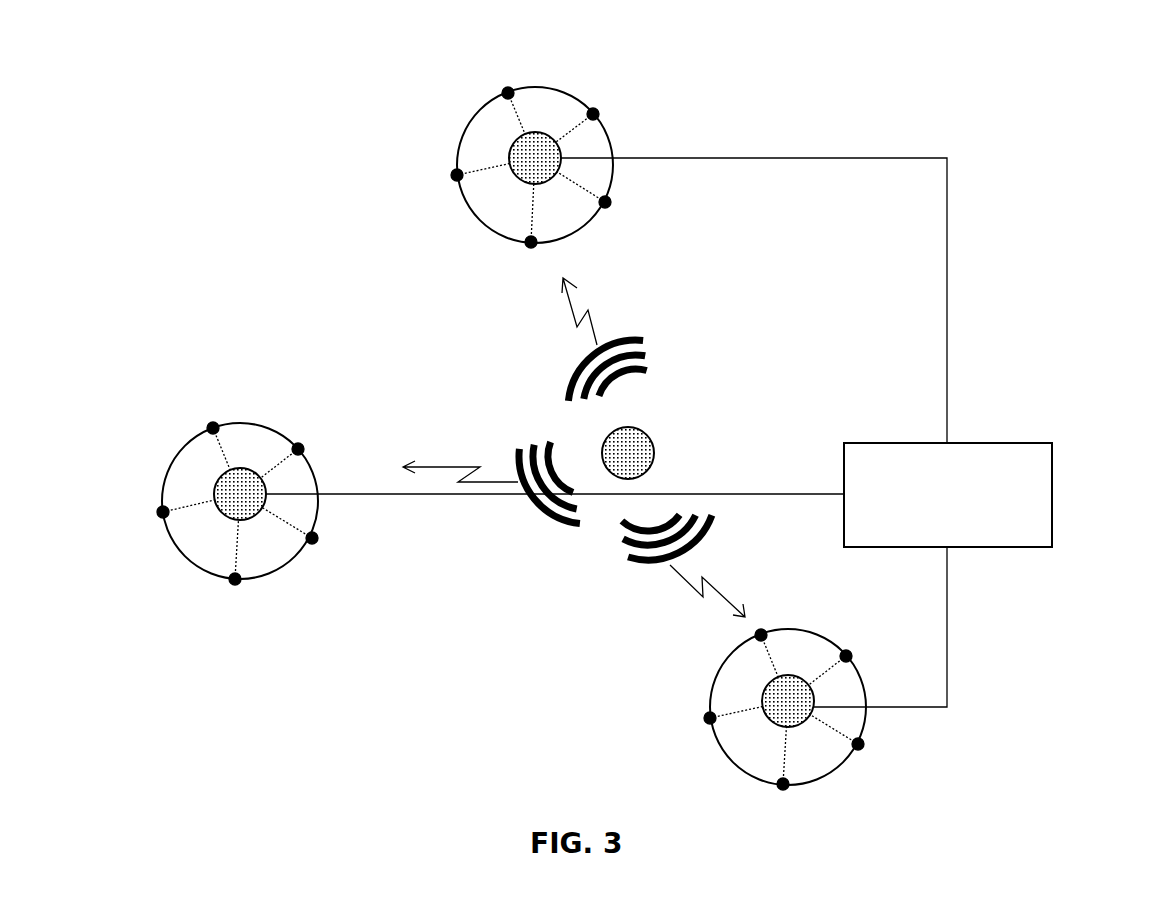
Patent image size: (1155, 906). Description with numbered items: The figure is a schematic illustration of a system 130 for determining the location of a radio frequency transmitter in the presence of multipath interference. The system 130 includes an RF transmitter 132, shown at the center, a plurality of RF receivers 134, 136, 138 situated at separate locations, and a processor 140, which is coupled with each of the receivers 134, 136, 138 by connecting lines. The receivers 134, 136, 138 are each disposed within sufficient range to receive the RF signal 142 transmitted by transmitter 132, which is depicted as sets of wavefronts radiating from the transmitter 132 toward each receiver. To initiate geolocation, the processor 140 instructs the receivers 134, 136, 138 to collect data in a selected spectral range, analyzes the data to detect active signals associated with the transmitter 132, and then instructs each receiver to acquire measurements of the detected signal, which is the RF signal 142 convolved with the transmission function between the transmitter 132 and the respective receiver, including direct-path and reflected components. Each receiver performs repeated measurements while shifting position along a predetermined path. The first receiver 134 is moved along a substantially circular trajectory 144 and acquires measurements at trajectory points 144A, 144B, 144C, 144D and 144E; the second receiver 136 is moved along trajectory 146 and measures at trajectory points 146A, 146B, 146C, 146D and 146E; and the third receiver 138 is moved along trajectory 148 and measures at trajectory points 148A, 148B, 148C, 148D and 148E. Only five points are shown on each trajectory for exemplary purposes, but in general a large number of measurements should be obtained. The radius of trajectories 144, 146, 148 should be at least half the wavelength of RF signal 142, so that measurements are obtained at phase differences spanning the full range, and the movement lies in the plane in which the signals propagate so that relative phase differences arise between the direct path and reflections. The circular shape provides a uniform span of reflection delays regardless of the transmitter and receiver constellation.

The system 130 is at (130, 66).
The radio frequency transmitter 132 is at (637, 427).
The RF receiver 134 is at (520, 182).
The RF receiver 136 is at (230, 520).
The RF receiver 138 is at (780, 727).
The processor 140 is at (1052, 465).
The RF signal 142 is at (637, 338).
The trajectory 144 is at (484, 100).
The trajectory point 144A is at (508, 93).
The trajectory point 144B is at (593, 114).
The trajectory point 144C is at (605, 202).
The trajectory point 144D is at (457, 175).
The trajectory point 144E is at (531, 242).
The trajectory 146 is at (186, 441).
The trajectory point 146A is at (213, 428).
The trajectory point 146B is at (298, 449).
The trajectory point 146C is at (312, 538).
The trajectory point 146D is at (163, 512).
The trajectory point 146E is at (235, 579).
The trajectory 148 is at (734, 647).
The trajectory point 148A is at (761, 635).
The trajectory point 148B is at (846, 656).
The trajectory point 148C is at (858, 744).
The trajectory point 148D is at (710, 718).
The trajectory point 148E is at (783, 784).